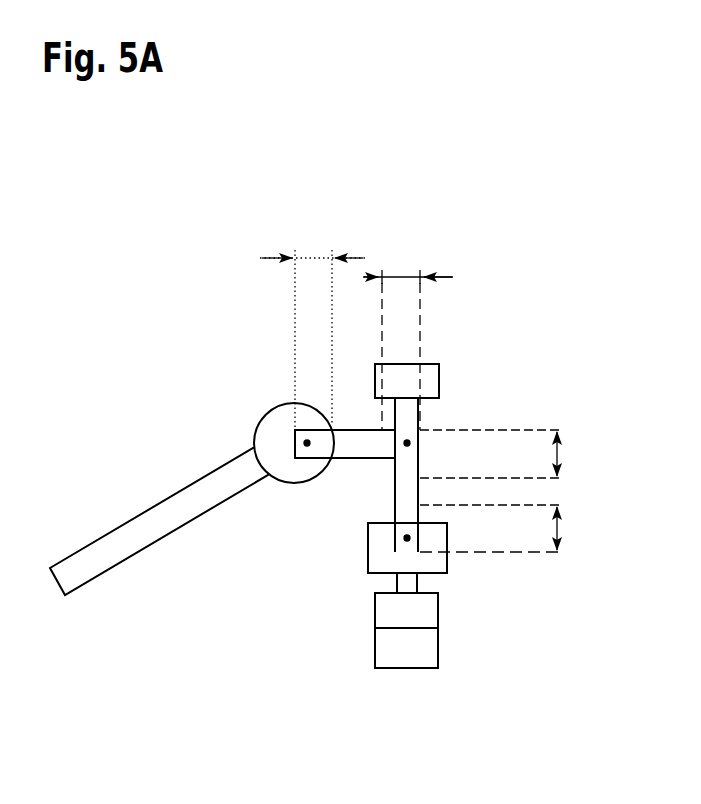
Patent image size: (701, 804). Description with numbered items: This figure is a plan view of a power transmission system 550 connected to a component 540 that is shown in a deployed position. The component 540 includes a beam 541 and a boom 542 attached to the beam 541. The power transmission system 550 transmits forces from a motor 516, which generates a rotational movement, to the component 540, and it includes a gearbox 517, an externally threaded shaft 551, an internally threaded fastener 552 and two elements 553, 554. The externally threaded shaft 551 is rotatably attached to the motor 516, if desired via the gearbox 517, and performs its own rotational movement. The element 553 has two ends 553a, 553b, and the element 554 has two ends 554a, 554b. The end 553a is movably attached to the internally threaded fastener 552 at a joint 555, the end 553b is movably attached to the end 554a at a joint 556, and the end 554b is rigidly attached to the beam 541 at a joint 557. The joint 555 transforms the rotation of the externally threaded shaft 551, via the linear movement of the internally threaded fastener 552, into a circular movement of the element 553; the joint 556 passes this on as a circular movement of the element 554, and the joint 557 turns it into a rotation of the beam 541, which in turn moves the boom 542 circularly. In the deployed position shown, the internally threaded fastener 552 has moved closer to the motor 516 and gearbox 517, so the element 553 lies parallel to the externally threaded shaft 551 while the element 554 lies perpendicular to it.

The power transmission system 550 is at (143, 272).
The component 540 is at (185, 413).
The beam 541 is at (273, 455).
The boom 542 is at (128, 542).
The joint 557 is at (307, 443).
The element 554 is at (355, 445).
The end 554a is at (398, 277).
The end 554b is at (310, 258).
The element 553 is at (402, 492).
The end 553a is at (558, 528).
The end 553b is at (558, 454).
The externally threaded shaft 551 is at (406, 415).
The internally threaded fastener 552 is at (433, 562).
The joint 555 is at (407, 538).
The joint 556 is at (413, 445).
The motor 516 is at (405, 648).
The gearbox 517 is at (417, 612).